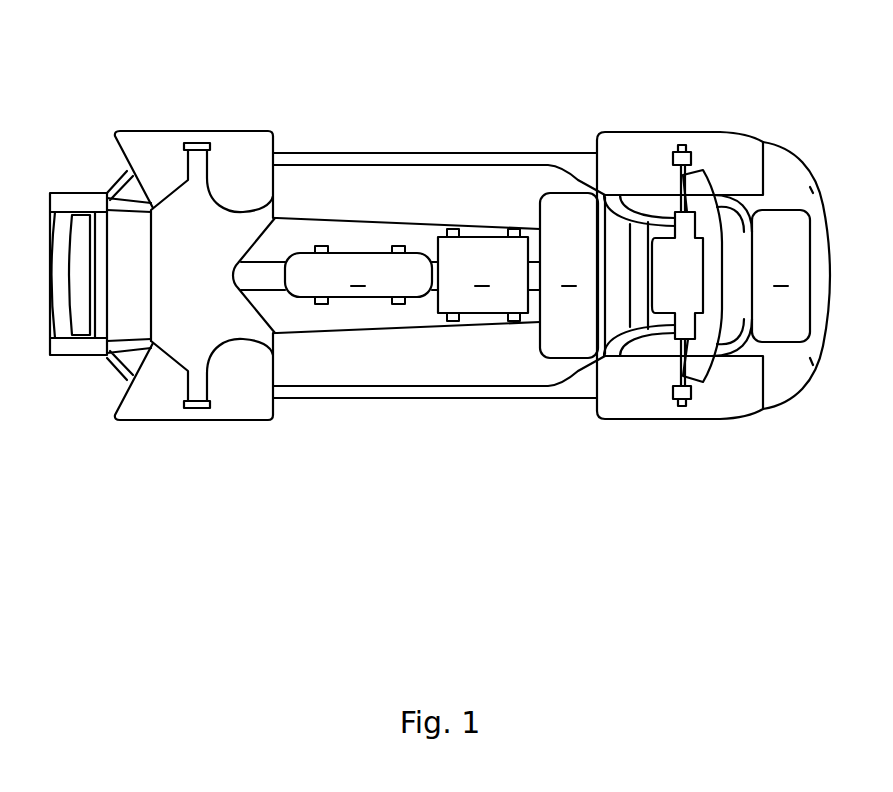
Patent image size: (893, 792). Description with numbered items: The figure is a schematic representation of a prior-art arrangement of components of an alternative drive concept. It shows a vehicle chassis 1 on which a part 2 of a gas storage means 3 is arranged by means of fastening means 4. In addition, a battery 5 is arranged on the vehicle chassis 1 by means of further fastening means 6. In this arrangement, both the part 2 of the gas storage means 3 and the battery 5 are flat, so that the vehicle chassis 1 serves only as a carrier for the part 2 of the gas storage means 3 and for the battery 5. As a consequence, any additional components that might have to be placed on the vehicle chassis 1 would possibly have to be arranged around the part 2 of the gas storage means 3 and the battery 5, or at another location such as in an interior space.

The vehicle chassis 1 is at (303, 153).
The part of a gas storage means 2 is at (416, 303).
The gas storage means 3 is at (547, 275).
The fastening means 4 is at (397, 246).
The battery 5 is at (483, 275).
The fastening means 6 is at (513, 229).